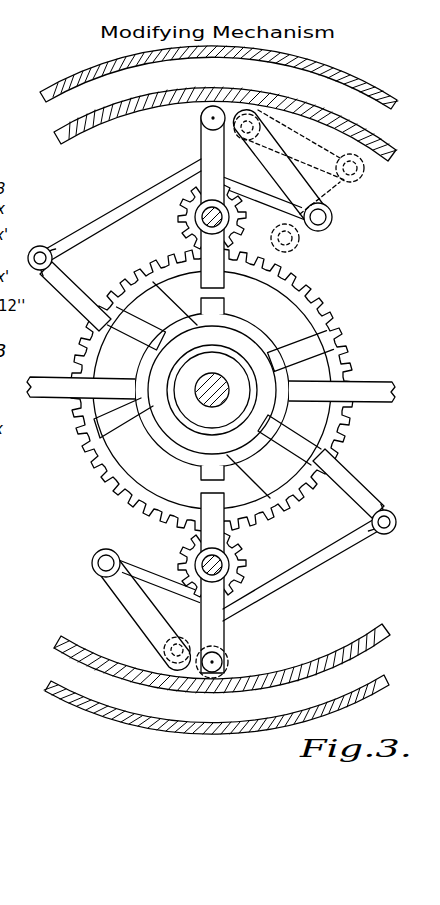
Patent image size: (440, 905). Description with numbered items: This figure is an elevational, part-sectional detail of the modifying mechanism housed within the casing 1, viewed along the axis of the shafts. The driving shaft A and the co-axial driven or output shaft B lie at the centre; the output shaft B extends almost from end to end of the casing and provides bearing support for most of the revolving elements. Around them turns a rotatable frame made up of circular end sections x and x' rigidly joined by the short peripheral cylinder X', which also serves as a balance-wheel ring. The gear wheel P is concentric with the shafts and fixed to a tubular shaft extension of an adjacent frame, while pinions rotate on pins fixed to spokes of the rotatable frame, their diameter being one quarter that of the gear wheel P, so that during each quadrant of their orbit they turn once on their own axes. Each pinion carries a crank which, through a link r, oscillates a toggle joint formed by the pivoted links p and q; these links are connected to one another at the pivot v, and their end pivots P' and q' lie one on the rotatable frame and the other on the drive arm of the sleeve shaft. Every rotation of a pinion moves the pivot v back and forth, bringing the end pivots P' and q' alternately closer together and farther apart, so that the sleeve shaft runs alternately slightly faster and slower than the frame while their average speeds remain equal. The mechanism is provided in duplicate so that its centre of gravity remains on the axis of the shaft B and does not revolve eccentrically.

The casing 1 is at (43, 96).
The peripheral cylinder X' is at (225, 390).
The gear wheel P is at (214, 390).
The end pivot P' is at (243, 369).
The circular end section x is at (212, 390).
The circular end section x' is at (211, 393).
The driven shaft B is at (224, 396).
The driving shaft A is at (78, 290).
The link q is at (212, 377).
The end pivot q' is at (215, 385).
The link p is at (283, 150).
The link r is at (292, 245).
The connecting pivot v is at (290, 150).